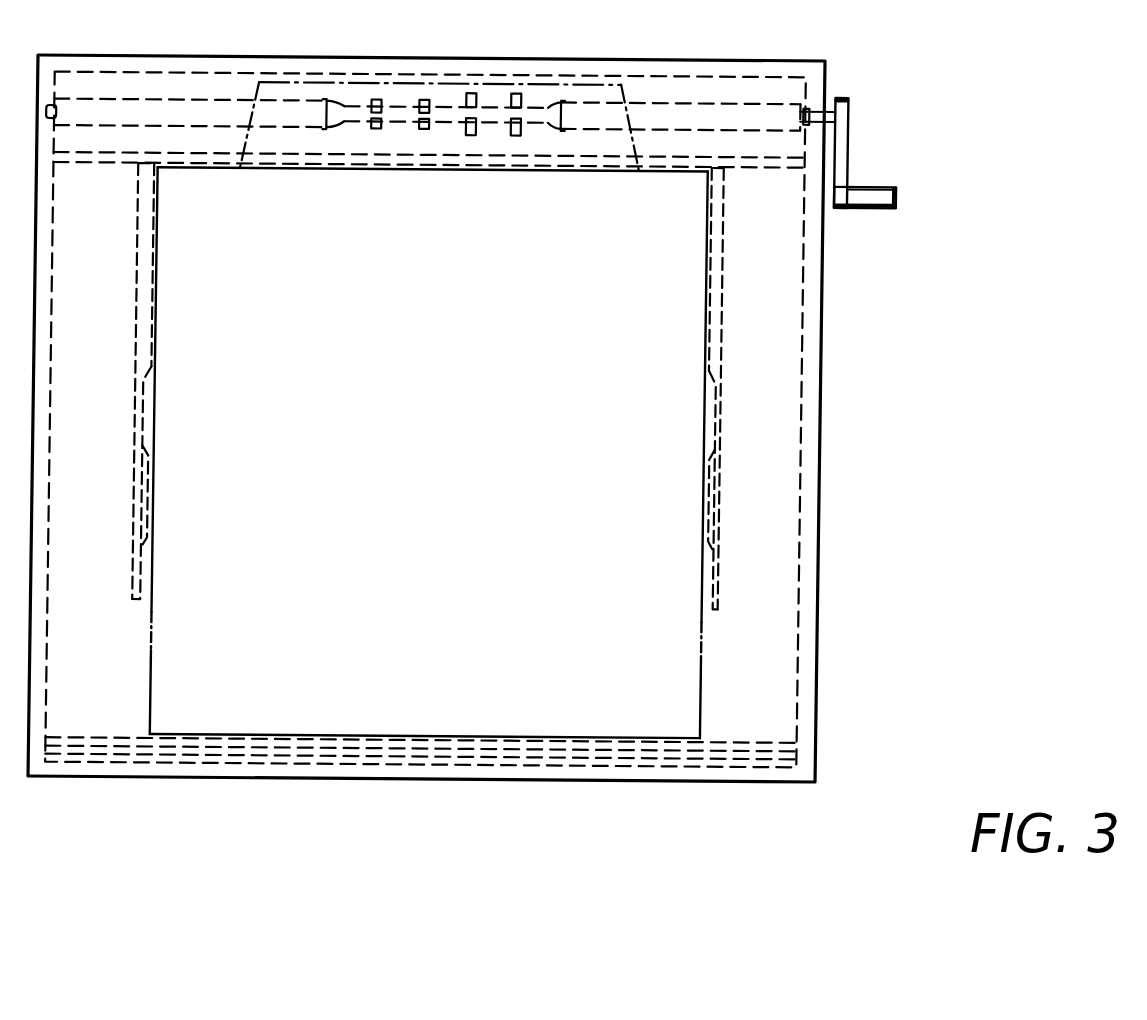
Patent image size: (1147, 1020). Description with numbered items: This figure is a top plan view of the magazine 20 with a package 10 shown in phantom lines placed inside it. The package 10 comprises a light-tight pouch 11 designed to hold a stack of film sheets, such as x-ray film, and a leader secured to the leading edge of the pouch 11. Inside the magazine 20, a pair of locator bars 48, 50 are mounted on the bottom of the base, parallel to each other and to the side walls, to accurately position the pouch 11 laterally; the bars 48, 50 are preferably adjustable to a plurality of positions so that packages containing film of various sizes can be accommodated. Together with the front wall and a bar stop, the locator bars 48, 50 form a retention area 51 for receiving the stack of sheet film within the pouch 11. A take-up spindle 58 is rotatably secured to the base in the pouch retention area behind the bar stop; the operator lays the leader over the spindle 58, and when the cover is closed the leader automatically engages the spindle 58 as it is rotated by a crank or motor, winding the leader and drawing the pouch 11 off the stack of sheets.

The magazine 20 is at (826, 463).
The take-up spindle 58 is at (707, 103).
The retention area 51 is at (92, 288).
The locator bar 50 is at (132, 488).
The locator bar 48 is at (723, 477).
The light-tight pouch 11 is at (152, 614).
The package 10 is at (703, 622).